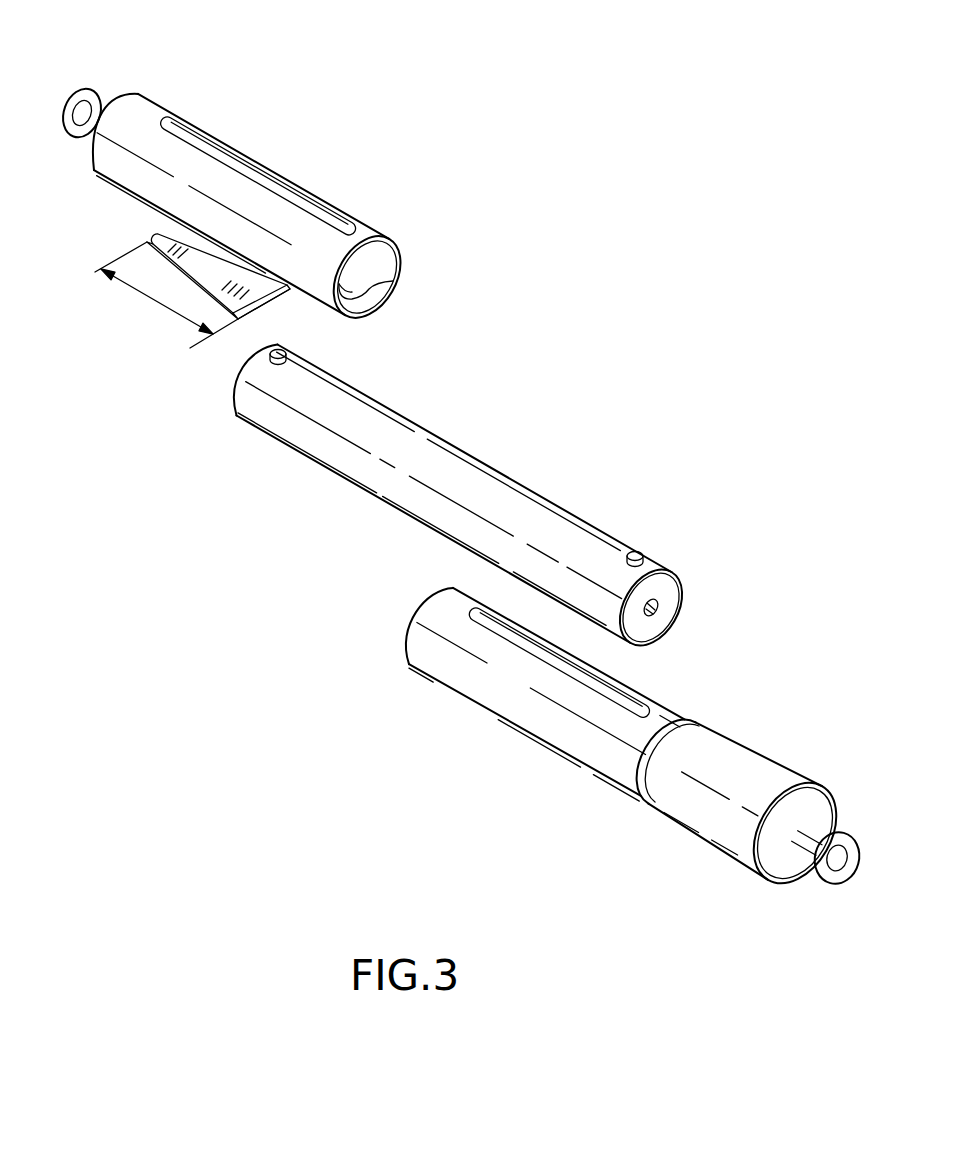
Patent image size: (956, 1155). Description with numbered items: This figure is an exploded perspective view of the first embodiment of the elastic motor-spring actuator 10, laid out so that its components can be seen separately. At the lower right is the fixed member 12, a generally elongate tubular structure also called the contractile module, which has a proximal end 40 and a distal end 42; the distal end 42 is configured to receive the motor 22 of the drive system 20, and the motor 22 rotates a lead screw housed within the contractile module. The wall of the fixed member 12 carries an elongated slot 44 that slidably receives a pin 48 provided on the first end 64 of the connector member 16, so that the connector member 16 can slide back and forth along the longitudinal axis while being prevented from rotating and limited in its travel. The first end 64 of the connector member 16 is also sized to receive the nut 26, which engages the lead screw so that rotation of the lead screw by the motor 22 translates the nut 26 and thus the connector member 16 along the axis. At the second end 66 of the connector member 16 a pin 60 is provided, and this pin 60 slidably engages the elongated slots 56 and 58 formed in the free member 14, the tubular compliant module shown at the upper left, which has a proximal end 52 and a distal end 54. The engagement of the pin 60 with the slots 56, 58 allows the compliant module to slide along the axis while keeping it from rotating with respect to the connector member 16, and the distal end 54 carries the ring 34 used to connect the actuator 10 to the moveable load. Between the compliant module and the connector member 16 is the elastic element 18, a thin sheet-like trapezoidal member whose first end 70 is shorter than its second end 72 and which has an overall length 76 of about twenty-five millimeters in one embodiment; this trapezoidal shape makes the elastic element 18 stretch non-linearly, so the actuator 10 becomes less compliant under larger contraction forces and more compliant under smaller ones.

The elastic motor-spring actuator 10 is at (431, 92).
The fixed member 12 is at (500, 718).
The free member 14 is at (258, 160).
The connector member 16 is at (447, 443).
The elastic element 18 is at (245, 322).
The drive system 20 is at (754, 749).
The motor 22 is at (707, 852).
The nut 26 is at (672, 604).
The second ring 34 is at (87, 88).
The proximal end 40 is at (410, 624).
The distal end 42 is at (644, 798).
The elongated slot 44 is at (531, 658).
The pin 48 is at (649, 561).
The proximal end 52 is at (398, 240).
The distal end 54 is at (148, 93).
The elongated slot 56 is at (334, 207).
The elongated slot 58 is at (384, 281).
The pin 60 is at (288, 356).
The first end 64 is at (620, 641).
The second end 66 is at (246, 424).
The first end 70 is at (148, 239).
The second end 72 is at (274, 303).
The overall length 76 is at (151, 301).